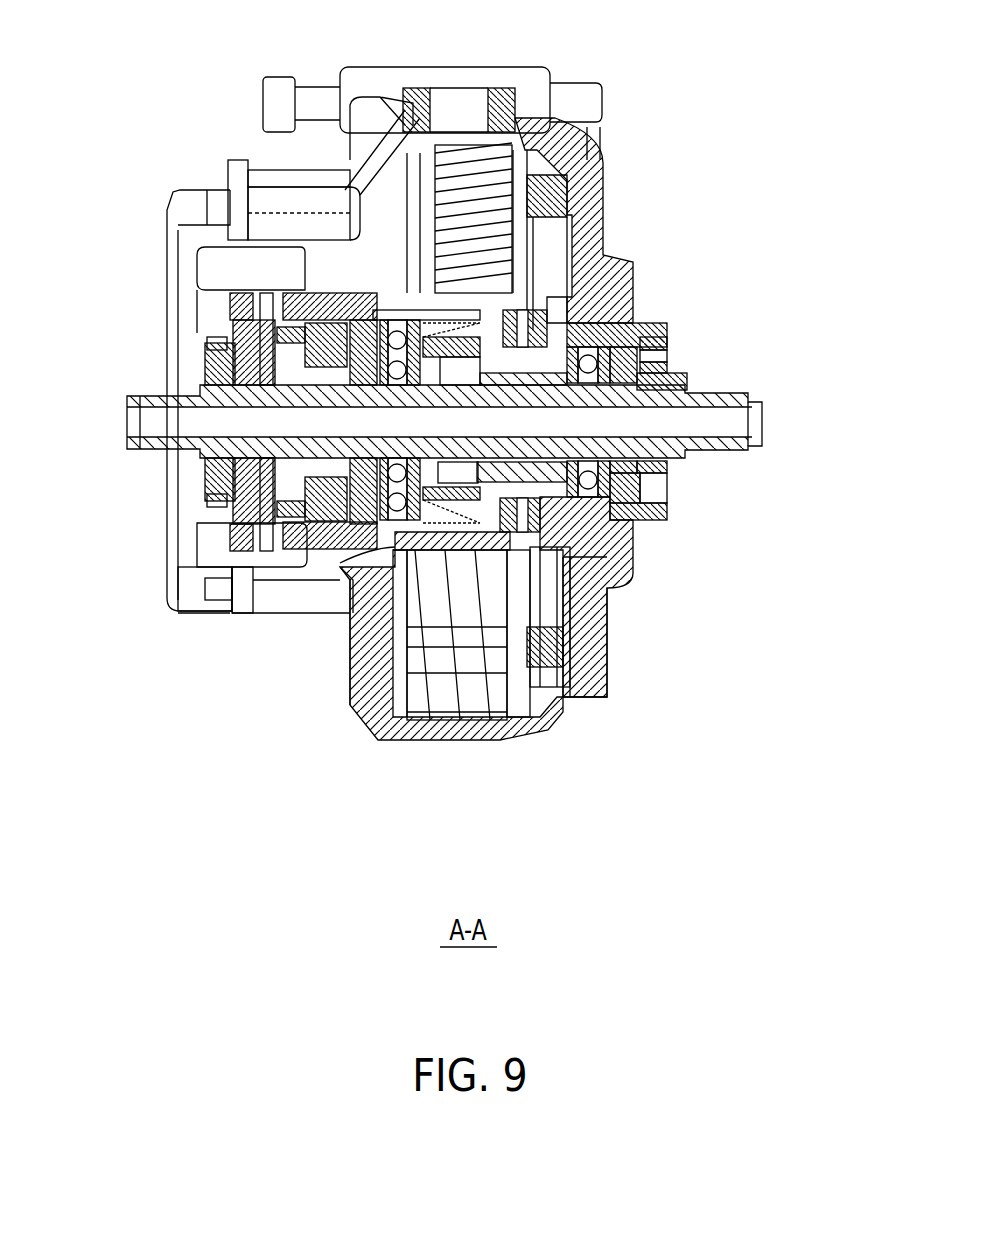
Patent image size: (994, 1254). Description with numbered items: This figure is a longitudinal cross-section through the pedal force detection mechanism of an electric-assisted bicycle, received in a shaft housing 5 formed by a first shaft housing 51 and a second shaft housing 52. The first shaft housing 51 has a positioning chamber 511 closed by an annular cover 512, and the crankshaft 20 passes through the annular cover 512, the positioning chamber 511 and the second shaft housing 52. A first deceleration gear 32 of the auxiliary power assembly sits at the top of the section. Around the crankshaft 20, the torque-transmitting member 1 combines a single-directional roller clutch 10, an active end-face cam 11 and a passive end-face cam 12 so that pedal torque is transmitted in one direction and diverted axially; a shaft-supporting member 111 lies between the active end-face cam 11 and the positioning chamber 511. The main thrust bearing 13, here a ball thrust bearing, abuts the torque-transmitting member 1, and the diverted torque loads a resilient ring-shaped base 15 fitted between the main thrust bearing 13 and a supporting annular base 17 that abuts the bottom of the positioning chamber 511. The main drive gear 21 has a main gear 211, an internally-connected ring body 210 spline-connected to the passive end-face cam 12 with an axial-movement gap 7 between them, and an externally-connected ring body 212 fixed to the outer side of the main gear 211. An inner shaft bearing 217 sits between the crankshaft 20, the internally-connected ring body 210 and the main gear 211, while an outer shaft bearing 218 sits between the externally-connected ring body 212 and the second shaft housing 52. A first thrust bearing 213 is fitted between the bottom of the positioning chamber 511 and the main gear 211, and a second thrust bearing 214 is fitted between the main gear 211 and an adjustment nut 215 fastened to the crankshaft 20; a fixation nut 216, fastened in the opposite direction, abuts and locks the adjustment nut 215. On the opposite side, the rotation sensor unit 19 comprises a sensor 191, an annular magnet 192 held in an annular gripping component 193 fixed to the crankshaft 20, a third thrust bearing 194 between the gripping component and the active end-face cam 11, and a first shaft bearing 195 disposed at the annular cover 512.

The torque-transmitting member 1 is at (211, 298).
The single-directional roller clutch 10 is at (265, 300).
The active end-face cam 11 is at (300, 305).
The passive end-face cam 12 is at (355, 300).
The main thrust bearing 13 is at (408, 470).
The resilient ring-shaped base 15 is at (448, 490).
The supporting annular base 17 is at (505, 500).
The axial-movement gap 7 is at (520, 473).
The rotation sensor unit 19 is at (199, 415).
The sensor 191 is at (222, 308).
The annular magnet 192 is at (222, 287).
The annular gripping component 193 is at (253, 487).
The third thrust bearing 194 is at (267, 527).
The first shaft bearing 195 is at (232, 422).
The crankshaft 20 is at (722, 397).
The main drive gear 21 is at (701, 407).
The internally-connected ring body 210 is at (543, 267).
The main gear 211 is at (573, 183).
The externally-connected ring body 212 is at (625, 300).
The first thrust bearing 213 is at (713, 627).
The second thrust bearing 214 is at (640, 460).
The adjustment nut 215 is at (627, 337).
The fixation nut 216 is at (643, 363).
The inner shaft bearing 217 is at (632, 568).
The outer shaft bearing 218 is at (665, 508).
The first deceleration gear 32 is at (457, 150).
The shaft housing 5 is at (423, 681).
The first shaft housing 51 is at (364, 676).
The positioning chamber 511 is at (350, 587).
The annular cover 512 is at (207, 560).
The second shaft housing 52 is at (610, 653).
The shaft-supporting member 111 is at (315, 533).